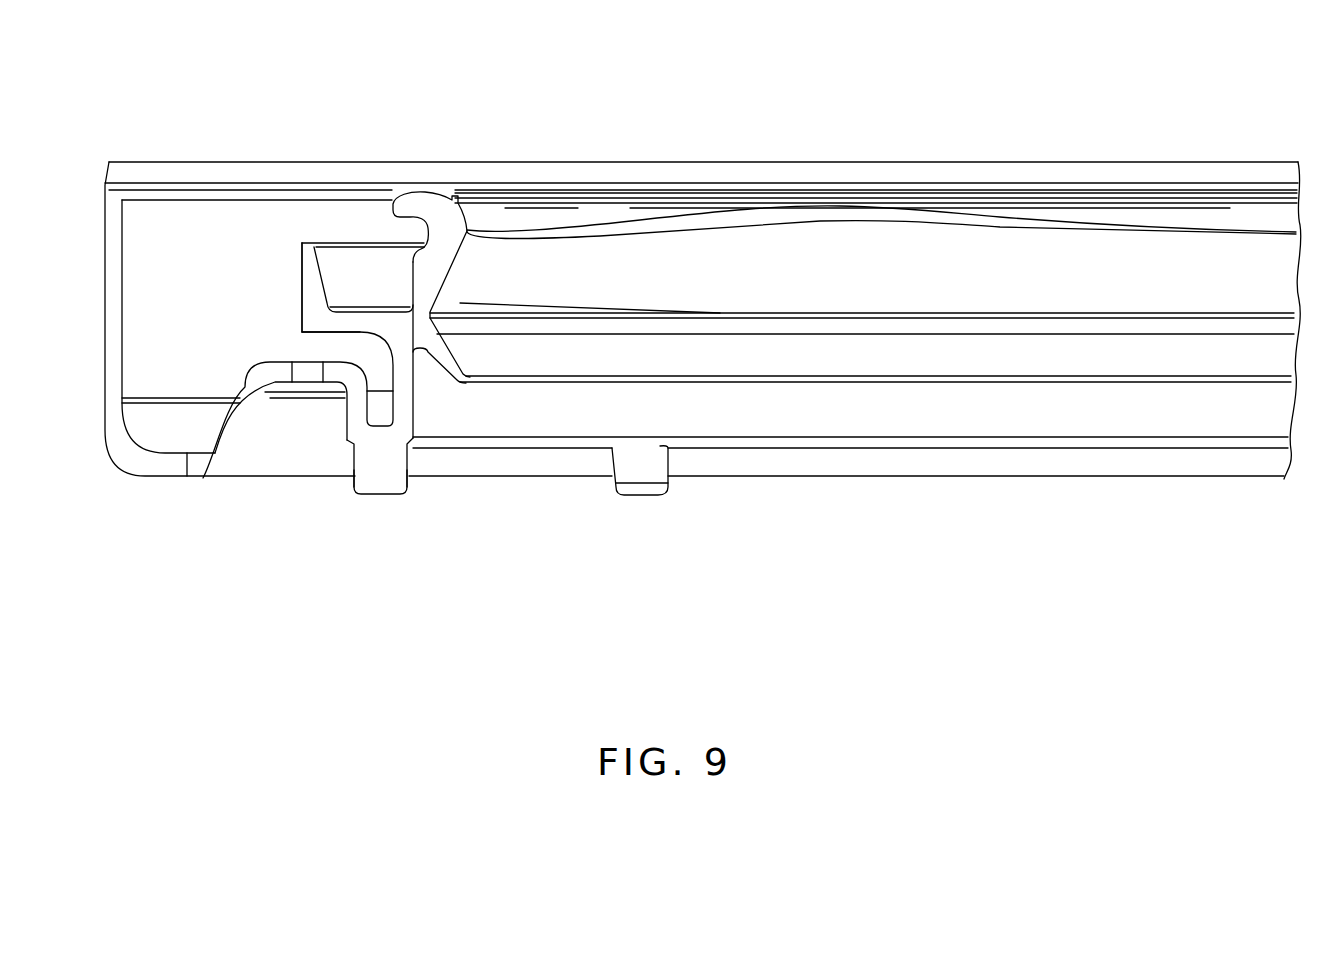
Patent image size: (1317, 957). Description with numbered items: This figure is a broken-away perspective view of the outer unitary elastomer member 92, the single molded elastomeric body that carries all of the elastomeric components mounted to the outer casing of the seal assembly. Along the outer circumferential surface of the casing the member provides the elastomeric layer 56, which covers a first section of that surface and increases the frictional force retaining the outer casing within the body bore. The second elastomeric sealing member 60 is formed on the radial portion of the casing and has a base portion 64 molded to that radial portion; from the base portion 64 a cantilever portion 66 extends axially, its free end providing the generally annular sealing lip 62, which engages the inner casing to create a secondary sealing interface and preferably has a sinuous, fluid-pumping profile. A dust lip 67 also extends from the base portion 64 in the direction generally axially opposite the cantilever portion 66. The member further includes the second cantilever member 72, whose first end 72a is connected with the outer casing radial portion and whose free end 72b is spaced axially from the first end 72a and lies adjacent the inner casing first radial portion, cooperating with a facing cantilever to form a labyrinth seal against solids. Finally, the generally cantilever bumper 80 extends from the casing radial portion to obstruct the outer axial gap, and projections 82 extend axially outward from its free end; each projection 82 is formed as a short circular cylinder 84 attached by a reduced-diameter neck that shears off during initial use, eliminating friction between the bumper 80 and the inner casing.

The outer unitary elastomer member 92 is at (593, 118).
The elastomeric layer 56 is at (107, 300).
The second elastomeric sealing member 60 is at (748, 161).
The sealing lip 62 is at (905, 215).
The base portion 64 is at (421, 330).
The cantilever portion 66 is at (424, 199).
The dust lip 67 is at (534, 376).
The second cantilever member 72 is at (295, 277).
The first end 72a is at (309, 316).
The free end 72b is at (308, 242).
The bumper 80 is at (913, 447).
The projections 82 is at (393, 498).
The circular cylinder 84 is at (403, 477).